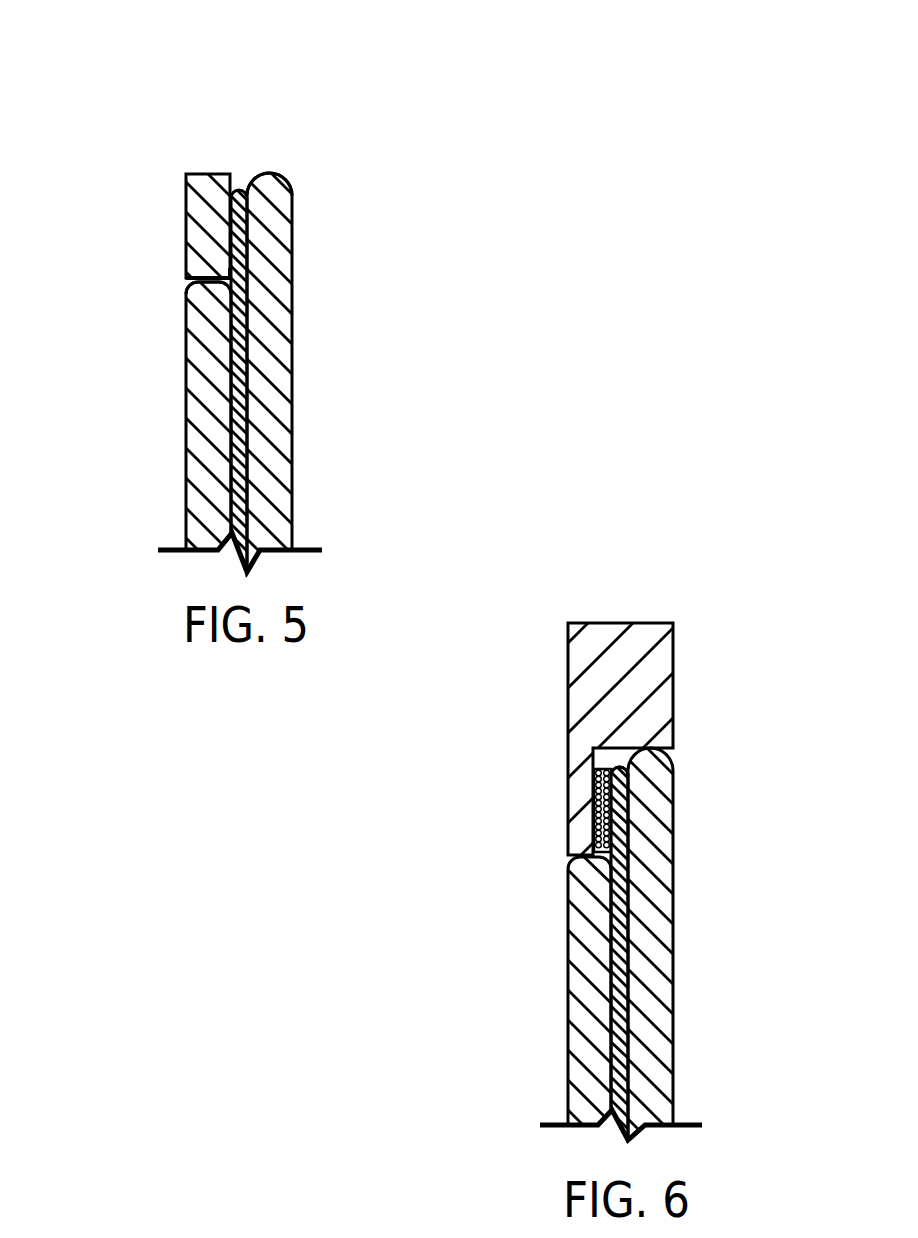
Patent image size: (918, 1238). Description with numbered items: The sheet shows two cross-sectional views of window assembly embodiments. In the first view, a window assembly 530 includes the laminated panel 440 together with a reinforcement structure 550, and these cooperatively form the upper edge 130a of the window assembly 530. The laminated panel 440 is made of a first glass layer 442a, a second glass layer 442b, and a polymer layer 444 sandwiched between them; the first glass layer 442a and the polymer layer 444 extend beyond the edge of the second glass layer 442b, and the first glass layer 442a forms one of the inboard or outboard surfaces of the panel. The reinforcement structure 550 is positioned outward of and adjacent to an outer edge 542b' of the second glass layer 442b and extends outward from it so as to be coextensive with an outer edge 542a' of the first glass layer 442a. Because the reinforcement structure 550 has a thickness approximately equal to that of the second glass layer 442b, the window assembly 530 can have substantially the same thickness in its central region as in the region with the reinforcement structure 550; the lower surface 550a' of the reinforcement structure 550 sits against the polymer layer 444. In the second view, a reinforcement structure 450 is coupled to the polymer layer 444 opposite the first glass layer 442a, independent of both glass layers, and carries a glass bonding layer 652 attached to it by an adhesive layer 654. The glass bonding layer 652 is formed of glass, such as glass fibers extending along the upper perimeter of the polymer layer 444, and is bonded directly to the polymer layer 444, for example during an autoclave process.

In FIG. 5, the upper edge 130a is at (233, 122).
In FIG. 6, the upper edge 130a is at (622, 622).
In FIG. 5, the window assembly 530 is at (340, 98).
In FIG. 5, the reinforcement structure 550 is at (210, 174).
In FIG. 5, the bottom surface of block 550a' is at (152, 235).
In FIG. 5, the outer edge of the first glass layer 542a' is at (326, 217).
In FIG. 5, the outer edge of the second glass layer 542b' is at (154, 323).
In FIG. 5, the polymer layer 444 is at (247, 403).
In FIG. 6, the polymer layer 444 is at (628, 983).
In FIG. 5, the first glass layer 442a is at (292, 465).
In FIG. 5, the second glass layer 442b is at (186, 527).
In FIG. 5, the laminated panel 440 is at (114, 414).
In FIG. 6, the laminated panel 440 is at (496, 988).
In FIG. 6, the reinforcement structure 450 is at (540, 594).
In FIG. 6, the adhesive layer 654 is at (600, 790).
In FIG. 6, the glass bonding layer 652 is at (630, 797).